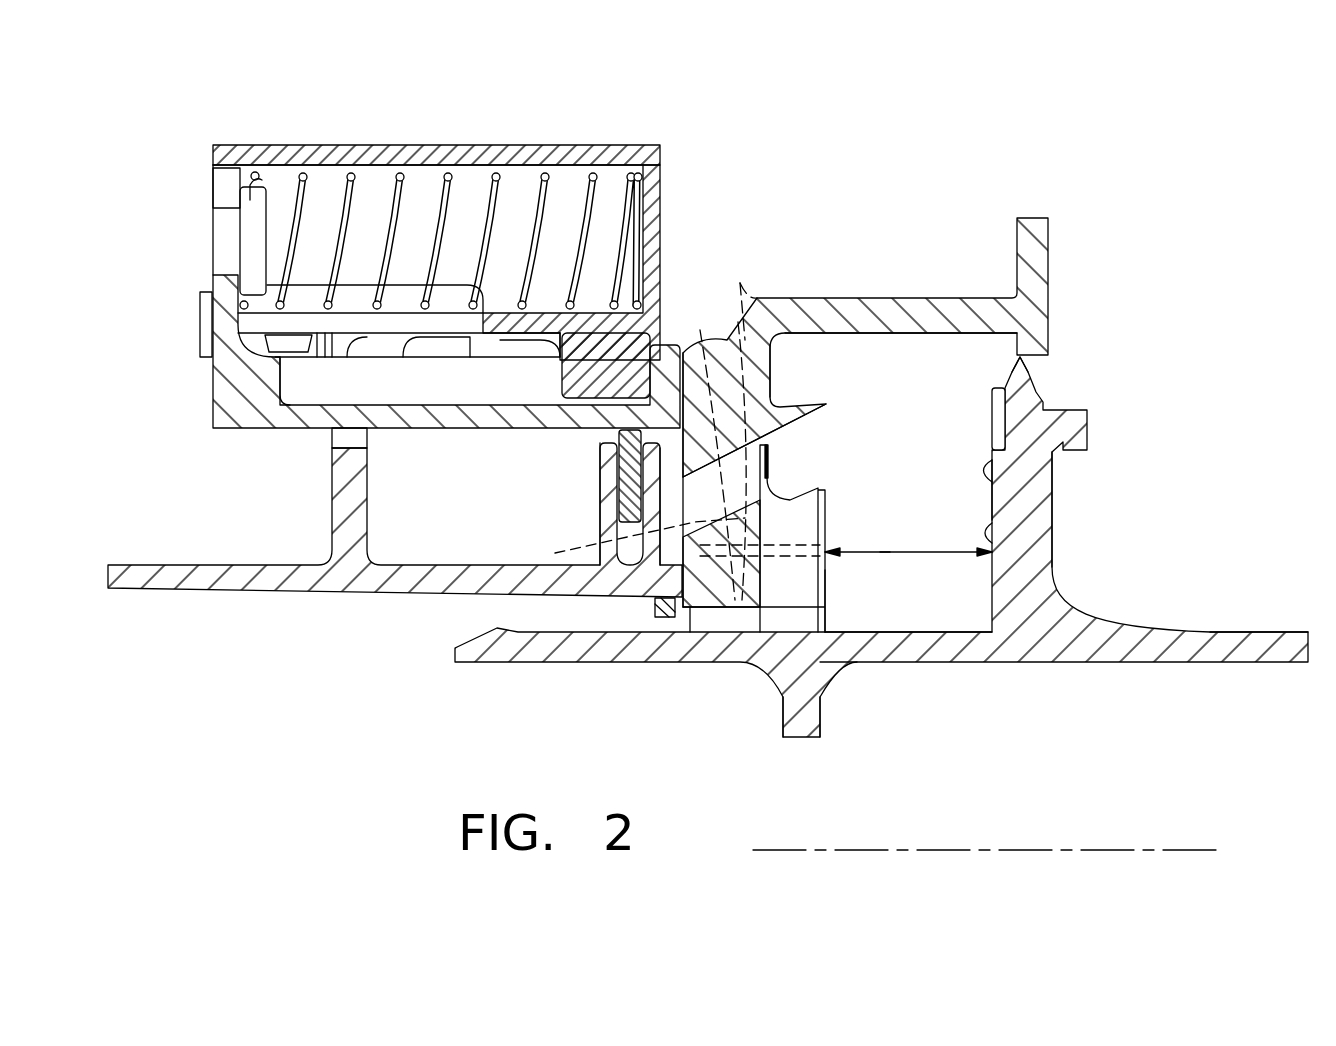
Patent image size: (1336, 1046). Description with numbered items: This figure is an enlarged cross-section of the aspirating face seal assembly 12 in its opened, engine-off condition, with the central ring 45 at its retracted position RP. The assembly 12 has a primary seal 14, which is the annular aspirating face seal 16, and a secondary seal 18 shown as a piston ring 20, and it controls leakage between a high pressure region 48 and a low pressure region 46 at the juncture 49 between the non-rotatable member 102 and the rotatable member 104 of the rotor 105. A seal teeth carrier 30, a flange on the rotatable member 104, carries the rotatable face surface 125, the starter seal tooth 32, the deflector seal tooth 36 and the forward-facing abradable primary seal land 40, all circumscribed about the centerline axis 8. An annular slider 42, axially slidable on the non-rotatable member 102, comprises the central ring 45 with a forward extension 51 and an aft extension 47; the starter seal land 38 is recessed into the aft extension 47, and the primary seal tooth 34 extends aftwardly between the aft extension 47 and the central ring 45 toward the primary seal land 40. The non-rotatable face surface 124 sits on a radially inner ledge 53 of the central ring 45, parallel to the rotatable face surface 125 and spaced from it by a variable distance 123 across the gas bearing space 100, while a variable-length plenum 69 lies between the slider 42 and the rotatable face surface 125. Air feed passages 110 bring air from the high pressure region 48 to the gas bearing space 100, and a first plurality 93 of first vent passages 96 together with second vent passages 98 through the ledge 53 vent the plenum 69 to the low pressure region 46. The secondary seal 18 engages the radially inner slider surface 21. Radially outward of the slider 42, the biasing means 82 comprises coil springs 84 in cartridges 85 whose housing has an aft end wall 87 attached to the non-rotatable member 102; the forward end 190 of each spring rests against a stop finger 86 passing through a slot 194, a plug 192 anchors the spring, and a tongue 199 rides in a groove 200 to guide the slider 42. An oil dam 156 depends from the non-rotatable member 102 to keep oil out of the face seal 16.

The centerline axis 8 is at (1118, 850).
The aspirating face seal assembly 12 is at (829, 413).
The primary seal 14 is at (928, 598).
The aspirating face seal 16 is at (1118, 368).
The secondary seal 18 is at (558, 462).
The piston ring 20 is at (605, 512).
The radially inner slider surface 21 is at (446, 374).
The seal teeth carrier 30 is at (1055, 515).
The starter seal tooth 32 is at (1022, 377).
The primary seal tooth 34 is at (830, 418).
The deflector seal tooth 36 is at (985, 462).
The starter seal land 38 is at (795, 360).
The primary seal land 40 is at (993, 402).
The annular slider 42 is at (682, 345).
The central ring 45 is at (740, 290).
The low pressure region 46 is at (881, 544).
The aft extension 47 is at (863, 298).
The high pressure region 48 is at (413, 215).
The juncture 49 is at (862, 382).
The forward extension 51 is at (288, 425).
The annular ledge 53 is at (827, 517).
The annular plenum 69 is at (975, 542).
The biasing means 82 is at (402, 128).
The coil spring 84 is at (537, 228).
The cartridge 85 is at (448, 145).
The stop finger 86 is at (212, 290).
The aft end wall 87 is at (660, 200).
The first plurality of first vent passages 93 is at (780, 470).
The first vent passage 96 is at (669, 543).
The second vent passage 98 is at (760, 640).
The gas bearing space 100 is at (1015, 662).
The non-rotatable member 102 is at (395, 529).
The rotatable member 104 is at (1040, 664).
The rotor 105 is at (1215, 665).
The air feed passage 110 is at (690, 640).
The variable distance 123 is at (886, 554).
The non-rotatable face surface 124 is at (826, 592).
The rotatable face surface 125 is at (994, 547).
The oil dam 156 is at (652, 605).
The forward end 190 is at (254, 178).
The plug 192 is at (232, 233).
The slot 194 is at (252, 322).
The tongue 199 is at (612, 362).
The groove 200 is at (455, 385).
The retracted position RP is at (870, 620).